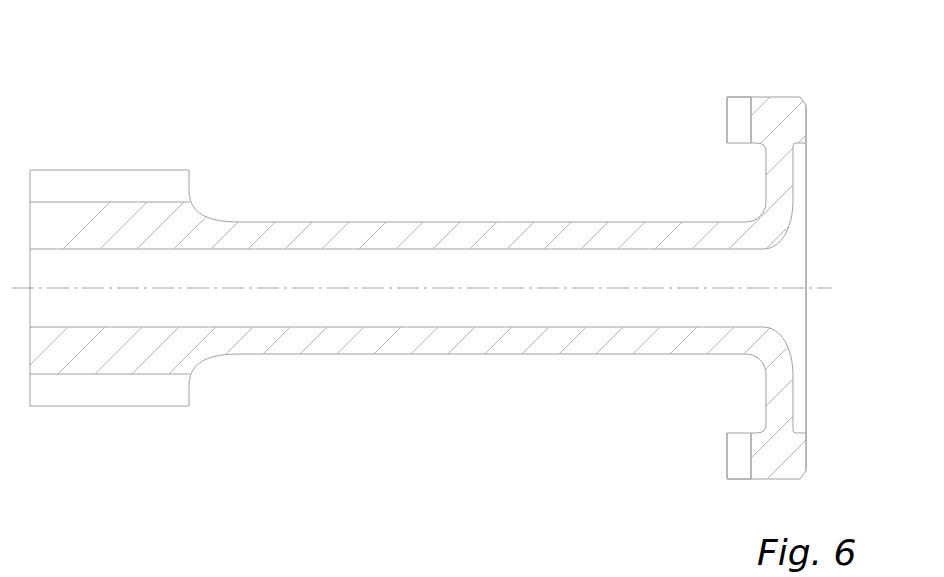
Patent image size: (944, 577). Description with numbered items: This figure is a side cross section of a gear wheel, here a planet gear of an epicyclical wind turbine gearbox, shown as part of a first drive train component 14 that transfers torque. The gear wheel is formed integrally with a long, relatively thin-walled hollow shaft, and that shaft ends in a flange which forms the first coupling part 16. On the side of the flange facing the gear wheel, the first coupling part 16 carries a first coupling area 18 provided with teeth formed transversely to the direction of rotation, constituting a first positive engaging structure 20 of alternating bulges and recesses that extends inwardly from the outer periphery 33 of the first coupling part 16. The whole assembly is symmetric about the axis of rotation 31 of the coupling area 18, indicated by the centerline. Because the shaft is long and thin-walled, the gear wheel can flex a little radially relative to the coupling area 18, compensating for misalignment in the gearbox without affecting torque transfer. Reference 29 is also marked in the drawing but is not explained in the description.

The first drive train component 14 is at (338, 128).
The first coupling part 16 is at (806, 105).
The first coupling area 18 is at (730, 118).
The first positive engaging structure 20 is at (757, 108).
The component 29 is at (338, 576).
The axis of rotation 31 is at (832, 288).
The outer periphery 33 is at (737, 97).